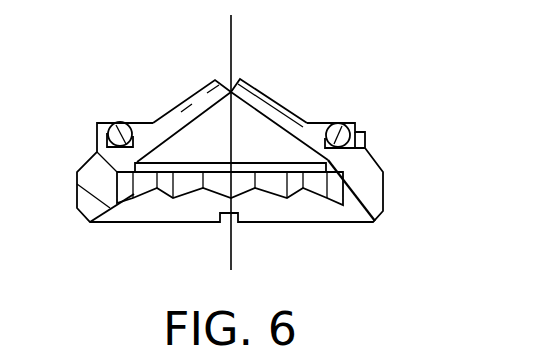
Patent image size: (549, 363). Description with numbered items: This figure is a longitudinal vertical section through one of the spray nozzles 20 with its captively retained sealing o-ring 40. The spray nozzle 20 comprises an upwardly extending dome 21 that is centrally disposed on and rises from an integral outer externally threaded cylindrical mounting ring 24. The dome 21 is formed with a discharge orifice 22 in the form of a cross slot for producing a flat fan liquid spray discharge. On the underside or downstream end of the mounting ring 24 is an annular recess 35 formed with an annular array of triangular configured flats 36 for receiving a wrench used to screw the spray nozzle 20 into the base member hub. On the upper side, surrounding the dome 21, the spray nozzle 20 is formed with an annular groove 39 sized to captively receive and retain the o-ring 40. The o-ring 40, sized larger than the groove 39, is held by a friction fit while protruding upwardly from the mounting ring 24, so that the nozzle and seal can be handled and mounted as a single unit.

The spray nozzle 20 is at (257, 144).
The dome 21 is at (273, 100).
The discharge orifice 22 is at (220, 77).
The mounting ring 24 is at (385, 196).
The annular recess 35 is at (114, 210).
The triangular configured flats 36 is at (315, 192).
The annular groove 39 is at (117, 124).
The o-ring 40 is at (347, 124).